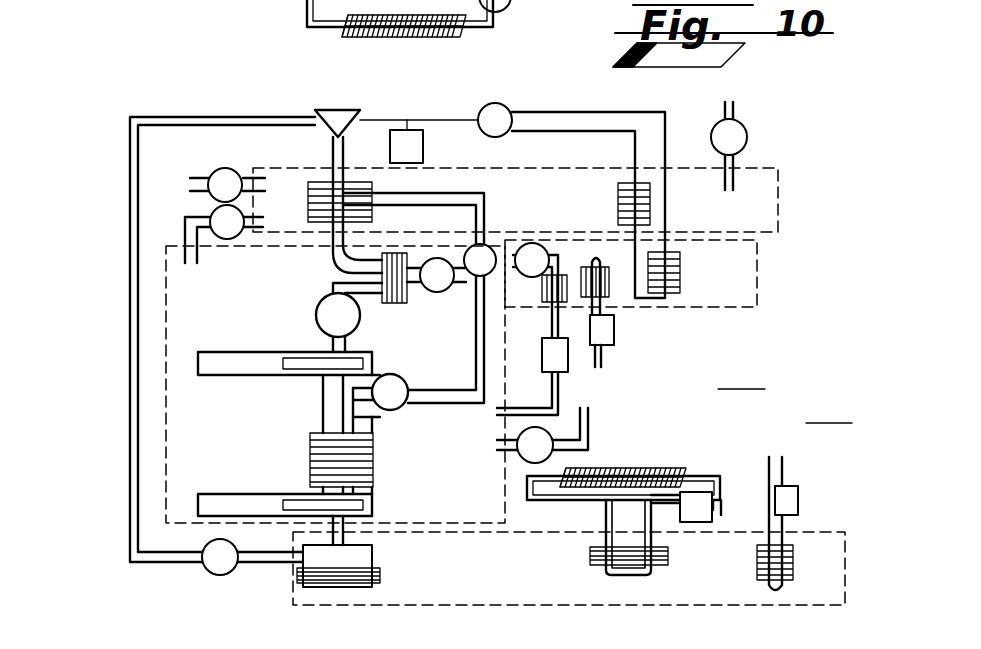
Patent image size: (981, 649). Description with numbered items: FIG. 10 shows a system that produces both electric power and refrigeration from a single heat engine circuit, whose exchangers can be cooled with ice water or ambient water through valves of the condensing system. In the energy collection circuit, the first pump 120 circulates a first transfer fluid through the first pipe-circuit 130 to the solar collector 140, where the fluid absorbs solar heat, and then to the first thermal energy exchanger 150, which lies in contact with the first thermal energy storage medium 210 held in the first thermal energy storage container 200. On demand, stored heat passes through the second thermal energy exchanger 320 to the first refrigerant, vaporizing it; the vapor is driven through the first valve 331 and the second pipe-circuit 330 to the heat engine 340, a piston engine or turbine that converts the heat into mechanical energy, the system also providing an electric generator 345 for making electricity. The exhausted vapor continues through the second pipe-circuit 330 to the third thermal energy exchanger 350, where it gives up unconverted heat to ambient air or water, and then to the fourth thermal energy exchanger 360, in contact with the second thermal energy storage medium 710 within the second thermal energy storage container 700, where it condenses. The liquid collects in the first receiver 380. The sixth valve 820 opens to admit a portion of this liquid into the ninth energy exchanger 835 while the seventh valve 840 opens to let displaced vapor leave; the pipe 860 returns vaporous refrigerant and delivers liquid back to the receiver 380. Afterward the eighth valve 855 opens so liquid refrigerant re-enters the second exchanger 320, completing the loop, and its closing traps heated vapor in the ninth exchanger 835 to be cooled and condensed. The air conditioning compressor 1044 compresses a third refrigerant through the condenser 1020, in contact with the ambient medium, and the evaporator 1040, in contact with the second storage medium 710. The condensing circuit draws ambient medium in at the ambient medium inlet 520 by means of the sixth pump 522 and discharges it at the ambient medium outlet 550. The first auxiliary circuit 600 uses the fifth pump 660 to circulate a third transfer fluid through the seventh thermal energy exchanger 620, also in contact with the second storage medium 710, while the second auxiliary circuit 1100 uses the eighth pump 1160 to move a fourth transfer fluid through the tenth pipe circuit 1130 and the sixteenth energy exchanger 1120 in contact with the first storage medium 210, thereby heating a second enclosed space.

The heat engine 340 is at (338, 108).
The solar collector 140 is at (370, 40).
The first pipe-circuit 130 is at (466, 30).
The air conditioning compressor 1044 is at (482, 108).
The electric generator 345 is at (424, 148).
The second pipe-circuit 330 is at (130, 163).
The first valve 331 is at (214, 576).
The ambient medium outlet 550 is at (187, 185).
The third thermal energy exchanger 350 is at (308, 200).
The a/c condenser 1020 is at (618, 202).
The a/c evaporator 1040 is at (715, 266).
The ambient medium inlet 520 is at (728, 180).
The sixth pump 522 is at (747, 138).
The seventh thermal energy exchanger 620 is at (580, 278).
The fifth pump 660 is at (600, 362).
The second thermal energy storage medium 710 is at (735, 278).
The second thermal energy storage container 700 is at (729, 307).
The pipe 860 is at (479, 318).
The fourth thermal energy exchanger 360 is at (382, 306).
The first receiver 380 is at (318, 320).
The sixth valve 820 is at (200, 353).
The seventh valve 840 is at (393, 412).
The ninth energy exchanger 835 is at (376, 455).
The eighth valve 855 is at (198, 505).
The second thermal energy exchanger 320 is at (380, 578).
The first auxiliary circuit 600 is at (741, 377).
The second auxiliary circuit 1100 is at (813, 494).
The first pump 120 is at (712, 518).
The eighth pump 1160 is at (800, 503).
The tenth pipe circuit 1130 is at (790, 523).
The sixteenth energy exchanger 1120 is at (830, 562).
The first thermal energy storage container 200 is at (293, 603).
The first thermal energy storage medium 210 is at (510, 580).
The first thermal energy exchanger 150 is at (668, 553).